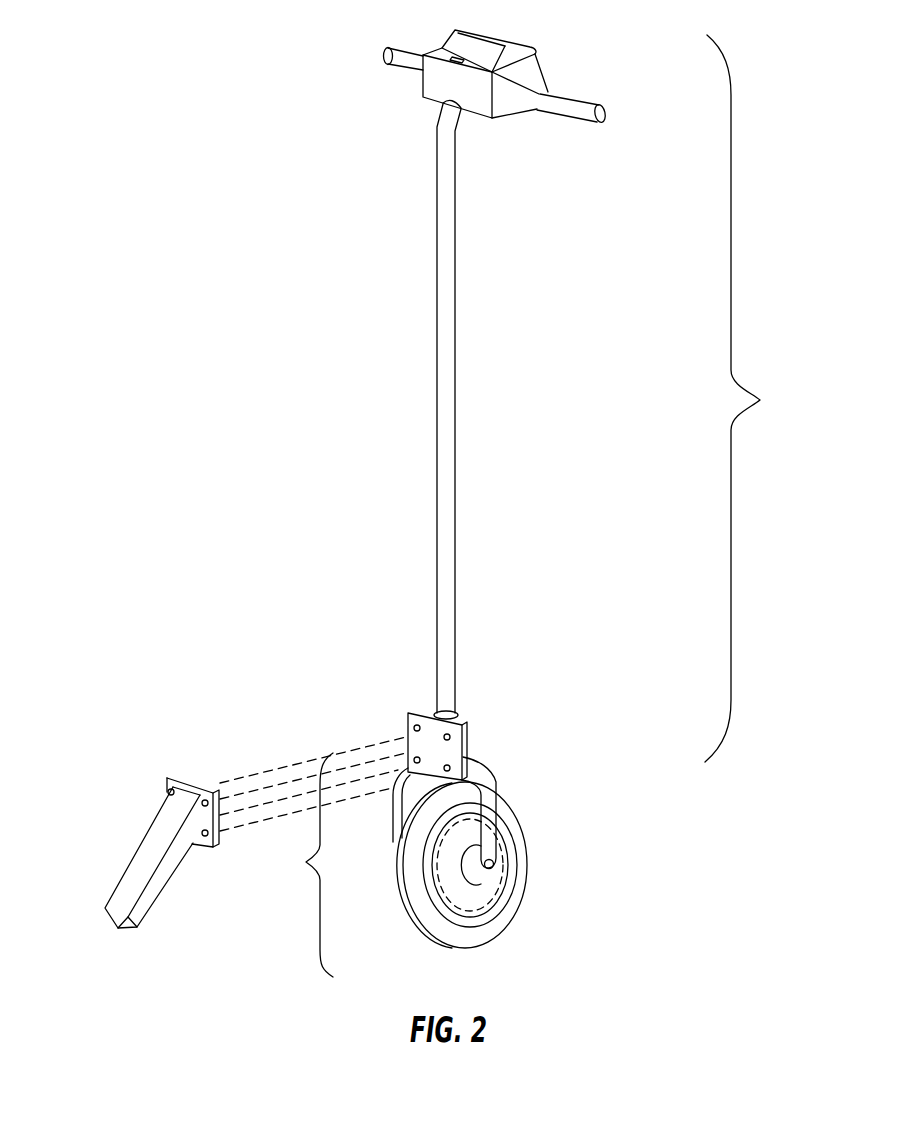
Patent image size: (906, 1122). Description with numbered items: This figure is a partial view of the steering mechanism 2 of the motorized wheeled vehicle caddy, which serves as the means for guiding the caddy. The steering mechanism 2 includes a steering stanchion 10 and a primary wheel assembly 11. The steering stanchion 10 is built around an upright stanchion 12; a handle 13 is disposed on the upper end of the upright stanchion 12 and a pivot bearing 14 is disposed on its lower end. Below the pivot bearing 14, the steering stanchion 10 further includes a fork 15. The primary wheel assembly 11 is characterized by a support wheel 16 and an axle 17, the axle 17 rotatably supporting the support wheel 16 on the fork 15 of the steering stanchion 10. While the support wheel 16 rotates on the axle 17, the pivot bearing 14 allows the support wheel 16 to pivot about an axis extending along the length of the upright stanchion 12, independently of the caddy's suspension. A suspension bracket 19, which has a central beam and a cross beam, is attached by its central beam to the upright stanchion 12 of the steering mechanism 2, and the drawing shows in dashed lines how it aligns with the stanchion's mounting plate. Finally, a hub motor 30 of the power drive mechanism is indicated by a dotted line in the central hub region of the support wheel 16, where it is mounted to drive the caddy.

The steering mechanism 2 is at (298, 161).
The steering stanchion 10 is at (753, 398).
The primary wheel assembly 11 is at (302, 865).
The upright stanchion 12 is at (437, 452).
The handle 13 is at (598, 104).
The pivot bearing 14 is at (464, 724).
The fork 15 is at (409, 734).
The support wheel 16 is at (467, 940).
The axle 17 is at (496, 862).
The suspension bracket 19 is at (141, 849).
The hub motor 30 is at (427, 903).